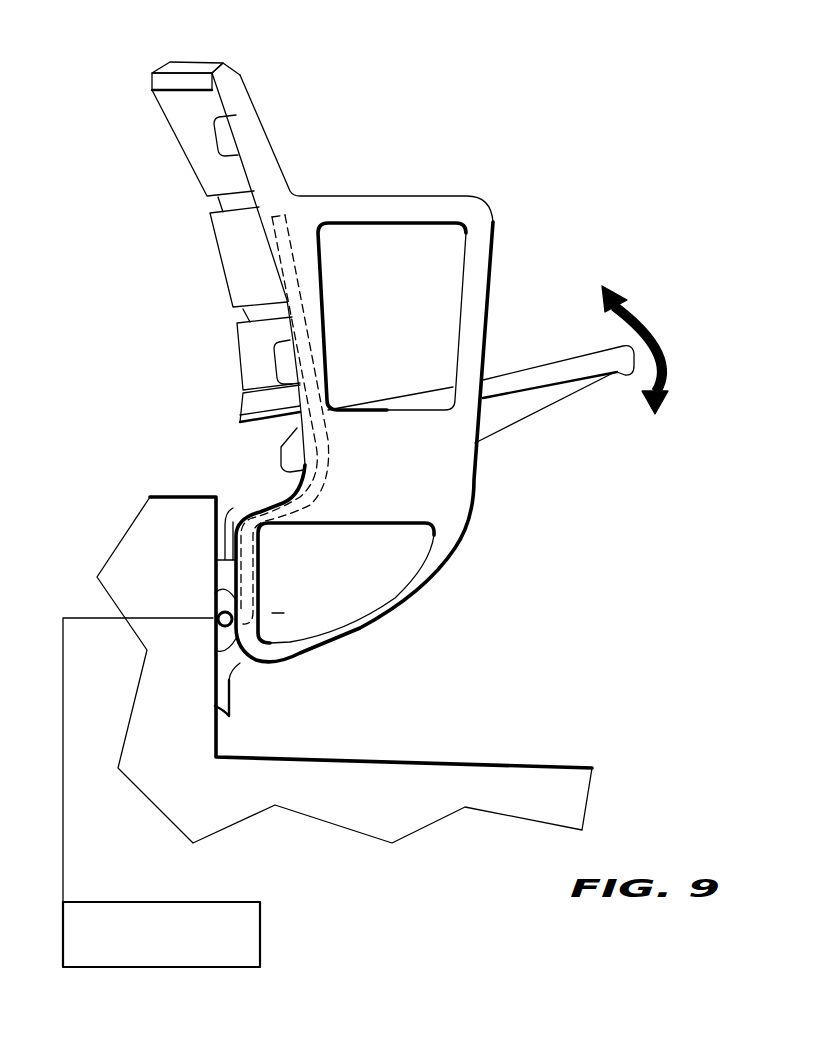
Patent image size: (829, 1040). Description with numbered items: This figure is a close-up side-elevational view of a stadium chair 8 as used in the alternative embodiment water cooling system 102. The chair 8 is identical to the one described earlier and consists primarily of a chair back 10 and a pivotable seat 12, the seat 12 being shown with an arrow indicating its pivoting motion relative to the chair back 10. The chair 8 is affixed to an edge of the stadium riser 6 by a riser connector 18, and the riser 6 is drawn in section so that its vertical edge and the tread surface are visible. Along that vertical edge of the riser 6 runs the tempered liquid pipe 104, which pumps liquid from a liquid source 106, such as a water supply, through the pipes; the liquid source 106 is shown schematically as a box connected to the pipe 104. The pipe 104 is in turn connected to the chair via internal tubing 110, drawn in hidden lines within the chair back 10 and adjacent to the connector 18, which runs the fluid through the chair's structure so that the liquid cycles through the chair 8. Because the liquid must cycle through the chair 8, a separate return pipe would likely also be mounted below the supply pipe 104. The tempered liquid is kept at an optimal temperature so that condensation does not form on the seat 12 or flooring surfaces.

The stadium chair 8 is at (76, 86).
The water cooling system 102 is at (693, 81).
The chair back 10 is at (250, 125).
The pivotable seat 12 is at (603, 344).
The internal tubing 110 is at (332, 455).
The riser connector 18 is at (268, 698).
The tempered liquid pipe 104 is at (214, 607).
The riser 6 is at (150, 497).
The liquid source 106 is at (161, 934).